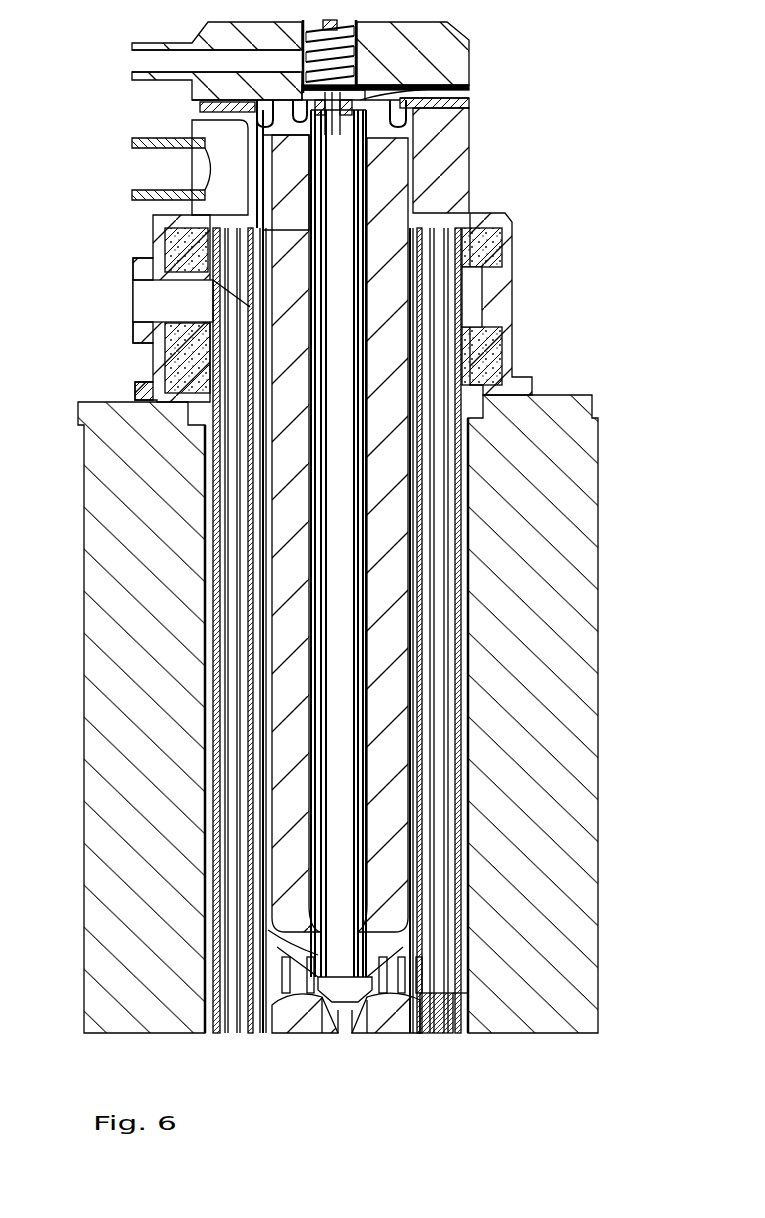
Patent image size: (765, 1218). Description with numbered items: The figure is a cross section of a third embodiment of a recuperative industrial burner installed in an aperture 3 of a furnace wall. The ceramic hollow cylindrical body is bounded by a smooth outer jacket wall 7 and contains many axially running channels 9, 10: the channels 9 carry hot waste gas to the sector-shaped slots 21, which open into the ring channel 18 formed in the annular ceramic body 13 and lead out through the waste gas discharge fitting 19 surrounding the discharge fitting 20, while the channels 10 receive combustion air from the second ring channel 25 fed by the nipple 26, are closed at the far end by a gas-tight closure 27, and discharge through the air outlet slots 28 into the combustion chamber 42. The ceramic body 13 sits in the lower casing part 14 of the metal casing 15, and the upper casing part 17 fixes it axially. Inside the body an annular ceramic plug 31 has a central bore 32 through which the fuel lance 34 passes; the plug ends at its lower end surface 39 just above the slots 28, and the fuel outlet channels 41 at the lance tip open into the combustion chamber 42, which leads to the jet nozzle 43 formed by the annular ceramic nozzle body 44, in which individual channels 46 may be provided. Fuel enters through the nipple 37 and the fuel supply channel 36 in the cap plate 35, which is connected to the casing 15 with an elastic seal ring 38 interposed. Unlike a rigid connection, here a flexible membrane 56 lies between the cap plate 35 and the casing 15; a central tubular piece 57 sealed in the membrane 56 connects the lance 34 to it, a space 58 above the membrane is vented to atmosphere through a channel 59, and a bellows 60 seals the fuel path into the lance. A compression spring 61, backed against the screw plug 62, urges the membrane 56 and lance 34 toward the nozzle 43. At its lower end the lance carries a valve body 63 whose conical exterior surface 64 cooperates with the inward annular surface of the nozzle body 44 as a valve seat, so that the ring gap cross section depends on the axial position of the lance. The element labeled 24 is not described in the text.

The aperture 3 is at (180, 640).
The outer jacket wall 7 is at (465, 315).
The channels 9 is at (230, 795).
The channels 10 is at (470, 593).
The ceramic body 13 is at (190, 240).
The lower casing part 14 is at (140, 392).
The metal casing 15 is at (515, 352).
The upper casing part 17 is at (470, 185).
The ring channel 18 is at (175, 358).
The waste gas discharge fitting 19 is at (150, 265).
The discharge fitting 20 is at (150, 332).
The slots 21 is at (200, 295).
The seal carrier 24 is at (205, 215).
The second ring channel 25 is at (215, 125).
The nipple 26 is at (160, 173).
The gas-tight closure 27 is at (455, 1033).
The slots 28 is at (315, 965).
The ceramic plug 31 is at (282, 530).
The central bore 32 is at (352, 490).
The fuel lance 34 is at (340, 130).
The cap plate 35 is at (440, 40).
The fuel supply channel 36 is at (165, 58).
The nipple 37 is at (200, 42).
The elastic seal ring 38 is at (200, 108).
The lower end surface 39 is at (420, 948).
The fuel outlet channels 41 is at (420, 939).
The combustion chamber 42 is at (405, 1033).
The jet nozzle 43 is at (333, 1033).
The nozzle body 44 is at (397, 1033).
The individual channels 46 is at (300, 1033).
The flexible membrane 56 is at (420, 92).
The central tubular piece 57 is at (306, 113).
The space 58 is at (282, 96).
The channel 59 is at (470, 84).
The bellows 60 is at (366, 85).
The compression spring 61 is at (343, 128).
The screw plug 62 is at (365, 50).
The valve body 63 is at (312, 1033).
The conical exterior surface 64 is at (510, 1033).